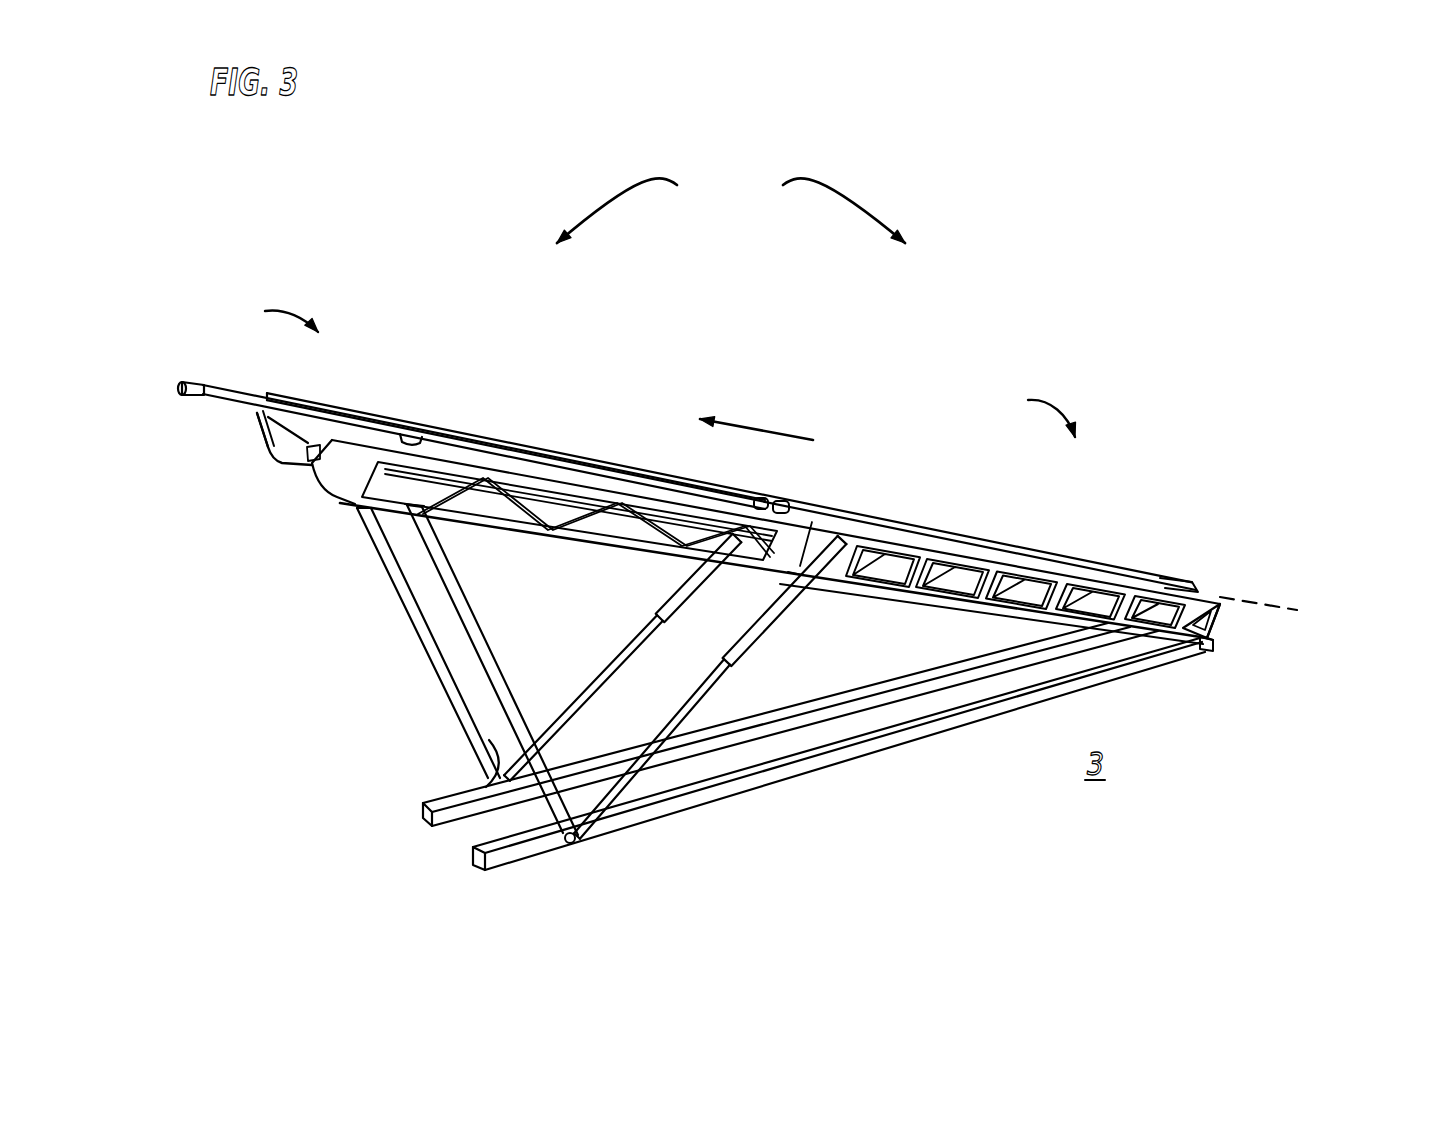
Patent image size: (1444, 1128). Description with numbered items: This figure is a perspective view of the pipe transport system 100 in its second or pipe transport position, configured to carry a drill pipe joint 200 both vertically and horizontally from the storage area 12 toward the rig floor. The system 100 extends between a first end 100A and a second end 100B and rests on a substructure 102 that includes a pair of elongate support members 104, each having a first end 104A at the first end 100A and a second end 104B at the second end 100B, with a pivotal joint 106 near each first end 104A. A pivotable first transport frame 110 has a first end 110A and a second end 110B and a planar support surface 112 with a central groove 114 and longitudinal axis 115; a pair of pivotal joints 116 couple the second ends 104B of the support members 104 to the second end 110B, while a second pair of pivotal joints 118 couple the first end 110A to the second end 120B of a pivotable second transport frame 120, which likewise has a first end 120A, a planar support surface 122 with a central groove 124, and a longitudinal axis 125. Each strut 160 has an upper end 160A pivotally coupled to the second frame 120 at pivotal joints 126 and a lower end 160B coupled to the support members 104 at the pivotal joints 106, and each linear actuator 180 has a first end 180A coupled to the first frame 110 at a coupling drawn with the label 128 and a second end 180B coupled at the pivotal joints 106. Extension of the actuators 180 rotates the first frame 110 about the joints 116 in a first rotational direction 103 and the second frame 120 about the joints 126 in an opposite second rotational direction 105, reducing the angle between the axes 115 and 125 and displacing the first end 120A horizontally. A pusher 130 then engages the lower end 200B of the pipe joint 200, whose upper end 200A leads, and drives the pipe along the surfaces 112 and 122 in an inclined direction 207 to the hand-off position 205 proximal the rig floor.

The storage area 12 is at (1036, 407).
The transport system 100 is at (1018, 302).
The first end of transport system 100A is at (255, 477).
The second end of transport system 100B is at (1287, 652).
The substructure 102 is at (475, 855).
The first rotational direction 103 is at (813, 178).
The support members 104 is at (425, 816).
The first end of support member 104A is at (775, 773).
The second end of support member 104B is at (1205, 651).
The second rotational direction 105 is at (652, 178).
The pivotal joint 106 is at (489, 785).
The first transport frame 110 is at (866, 589).
The first end of first transport frame 110A is at (892, 510).
The second end of first transport frame 110B is at (1217, 616).
The support surface 112 is at (950, 533).
The groove 114 is at (1123, 572).
The longitudinal axis 115 is at (1310, 565).
The pivotal joints 116 is at (1213, 641).
The pivotal joints 118 is at (795, 572).
The second transport frame 120 is at (662, 469).
The first end of second transport frame 120A is at (257, 416).
The second end of second transport frame 120B is at (801, 526).
The support surface 122 is at (567, 455).
The groove 124 is at (425, 437).
The longitudinal axis 125 is at (1240, 597).
The pivotal joints 126 is at (422, 512).
The upper brace pivot 128 is at (840, 542).
The pusher 130 is at (780, 503).
The struts 160 is at (457, 597).
The upper end of strut 160A is at (489, 551).
The lower end of strut 160B is at (438, 836).
The linear actuators 180 is at (688, 706).
The first end of actuator 180A is at (846, 593).
The second end of actuator 180B is at (497, 760).
The pipe joint 200 is at (507, 447).
The upper end of pipe joint 200A is at (182, 388).
The lower end of pipe joint 200B is at (760, 500).
The hand-off position 205 is at (265, 310).
The inclined direction 207 is at (762, 428).